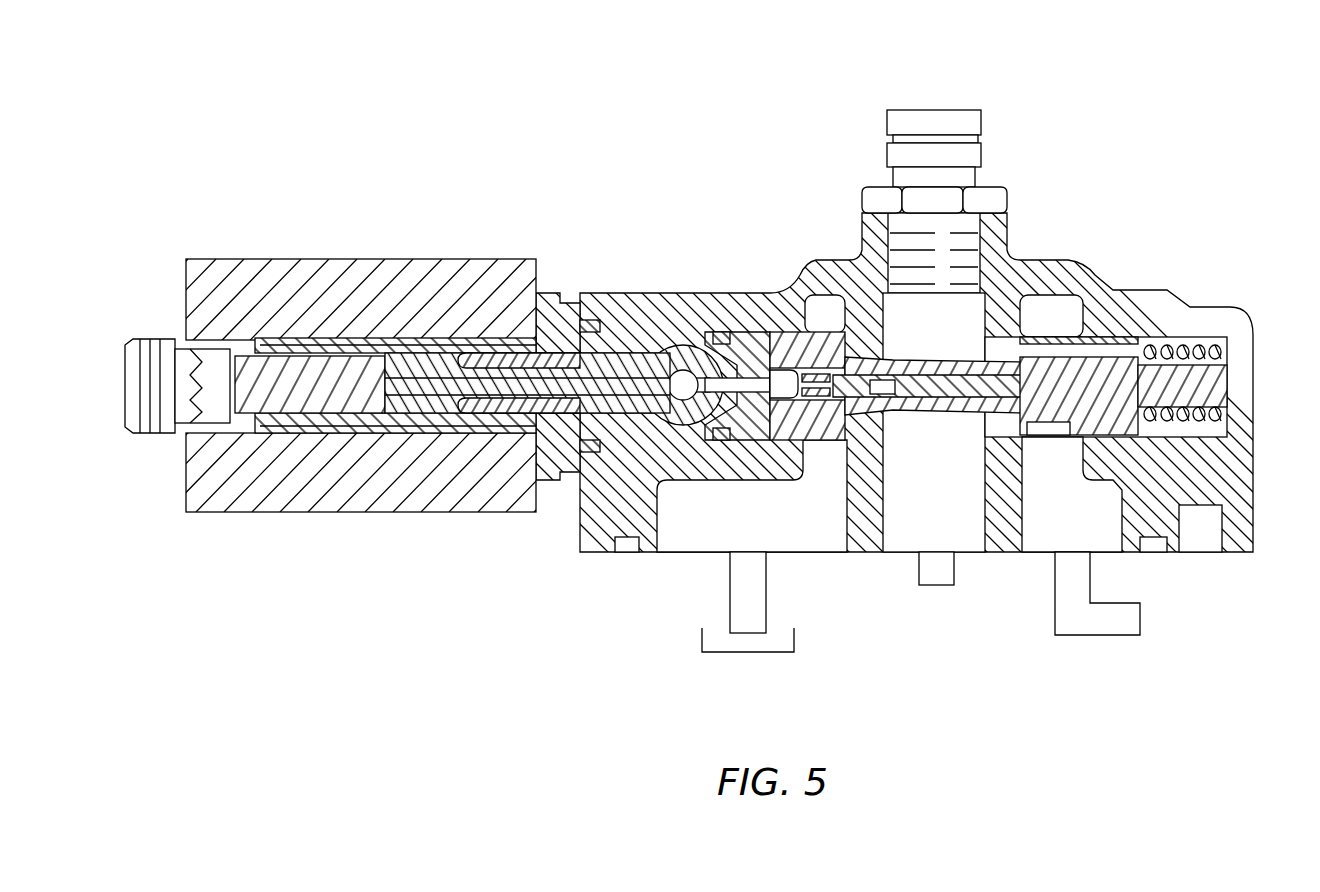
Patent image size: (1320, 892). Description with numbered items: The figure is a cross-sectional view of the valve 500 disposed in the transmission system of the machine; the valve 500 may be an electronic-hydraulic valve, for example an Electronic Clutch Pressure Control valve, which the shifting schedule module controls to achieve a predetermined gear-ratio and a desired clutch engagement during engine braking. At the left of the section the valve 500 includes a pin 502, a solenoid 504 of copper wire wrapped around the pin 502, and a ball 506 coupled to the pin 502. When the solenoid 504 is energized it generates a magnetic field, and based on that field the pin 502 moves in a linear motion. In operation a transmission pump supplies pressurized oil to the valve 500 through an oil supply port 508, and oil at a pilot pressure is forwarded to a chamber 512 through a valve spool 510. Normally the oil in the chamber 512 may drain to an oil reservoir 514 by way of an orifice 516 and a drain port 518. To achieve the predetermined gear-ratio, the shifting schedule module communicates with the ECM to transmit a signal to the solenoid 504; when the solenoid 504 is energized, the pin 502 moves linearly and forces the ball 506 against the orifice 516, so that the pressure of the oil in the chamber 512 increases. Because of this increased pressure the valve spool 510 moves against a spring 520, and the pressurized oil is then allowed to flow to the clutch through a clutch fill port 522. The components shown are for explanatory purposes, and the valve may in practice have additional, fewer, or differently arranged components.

The valve 500 is at (660, 372).
The pin 502 is at (455, 395).
The solenoid 504 is at (328, 512).
The ball 506 is at (681, 370).
The oil supply port 508 is at (1092, 553).
The valve spool 510 is at (1055, 338).
The chamber 512 is at (798, 350).
The oil reservoir 514 is at (702, 640).
The orifice 516 is at (706, 380).
The drain port 518 is at (768, 553).
The spring 520 is at (1176, 345).
The clutch fill port 522 is at (957, 553).